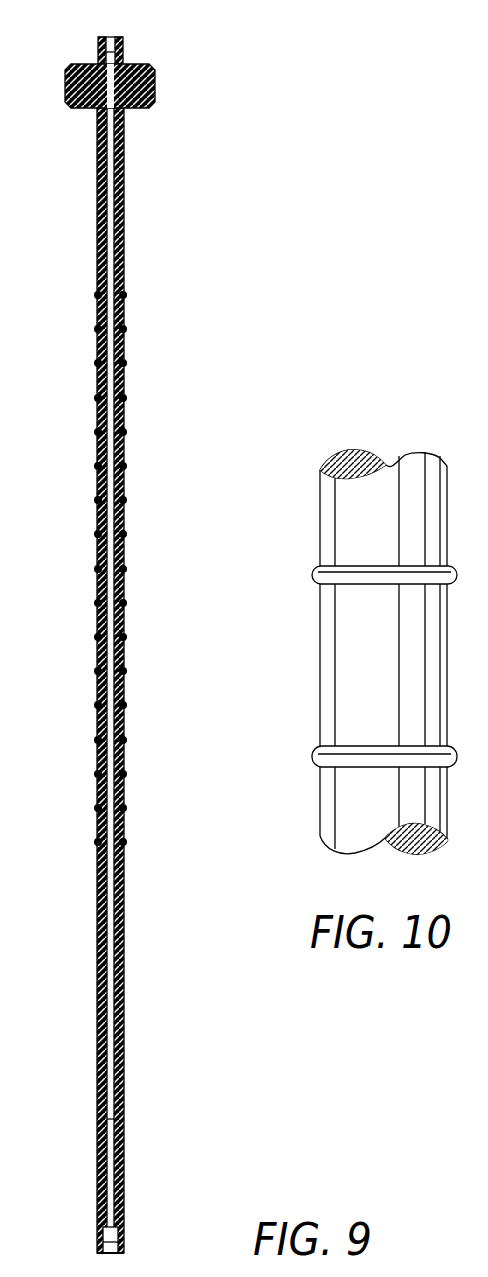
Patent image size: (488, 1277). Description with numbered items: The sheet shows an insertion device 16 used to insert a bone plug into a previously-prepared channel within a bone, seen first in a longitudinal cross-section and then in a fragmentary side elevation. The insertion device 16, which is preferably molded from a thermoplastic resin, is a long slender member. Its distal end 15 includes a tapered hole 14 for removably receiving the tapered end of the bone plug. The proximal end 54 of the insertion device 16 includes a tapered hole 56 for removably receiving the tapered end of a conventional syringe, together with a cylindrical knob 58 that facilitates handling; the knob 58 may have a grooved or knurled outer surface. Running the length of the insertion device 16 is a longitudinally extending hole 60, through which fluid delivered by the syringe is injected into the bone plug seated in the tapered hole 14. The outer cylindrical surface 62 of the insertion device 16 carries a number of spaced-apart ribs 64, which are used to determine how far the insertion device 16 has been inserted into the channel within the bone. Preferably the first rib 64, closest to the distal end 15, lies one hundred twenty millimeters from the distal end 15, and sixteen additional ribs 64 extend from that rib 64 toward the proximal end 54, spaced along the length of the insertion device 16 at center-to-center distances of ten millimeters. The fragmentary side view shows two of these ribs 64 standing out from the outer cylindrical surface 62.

In FIG. 9, the tapered hole 14 is at (118, 1240).
In FIG. 9, the distal end 15 is at (100, 1254).
In FIG. 9, the insertion device 16 is at (110, 680).
In FIG. 10, the insertion device 16 is at (341, 654).
In FIG. 9, the proximal end 54 is at (100, 37).
In FIG. 9, the tapered hole 56 is at (121, 52).
In FIG. 9, the cylindrical knob 58 is at (155, 82).
In FIG. 9, the longitudinally extending hole 60 is at (114, 1119).
In FIG. 9, the outer cylindrical surface 62 is at (97, 1157).
In FIG. 10, the outer cylindrical surface 62 is at (320, 720).
In FIG. 9, the ribs 64 is at (125, 808).
In FIG. 10, the ribs 64 is at (311, 575).